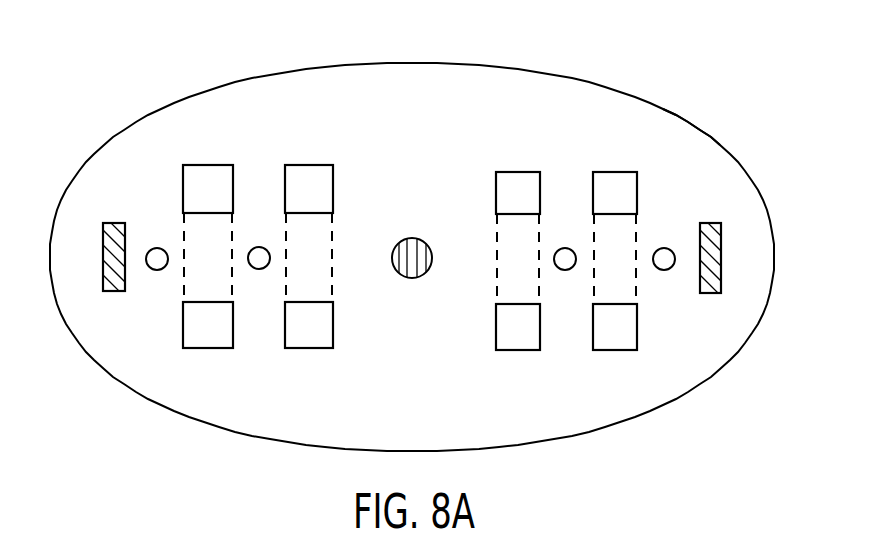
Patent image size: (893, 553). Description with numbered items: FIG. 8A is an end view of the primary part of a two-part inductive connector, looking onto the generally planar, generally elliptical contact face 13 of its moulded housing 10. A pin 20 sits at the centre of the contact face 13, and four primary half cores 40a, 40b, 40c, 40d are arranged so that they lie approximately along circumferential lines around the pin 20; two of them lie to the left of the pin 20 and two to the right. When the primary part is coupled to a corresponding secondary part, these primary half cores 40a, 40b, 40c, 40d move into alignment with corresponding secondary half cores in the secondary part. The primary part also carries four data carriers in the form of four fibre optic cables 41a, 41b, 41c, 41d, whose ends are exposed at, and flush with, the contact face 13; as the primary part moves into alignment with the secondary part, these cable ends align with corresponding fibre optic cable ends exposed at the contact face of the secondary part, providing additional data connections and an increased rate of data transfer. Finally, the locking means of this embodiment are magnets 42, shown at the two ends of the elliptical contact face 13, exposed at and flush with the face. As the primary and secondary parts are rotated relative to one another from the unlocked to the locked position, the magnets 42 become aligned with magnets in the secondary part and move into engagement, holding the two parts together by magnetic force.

The two-part moulded housing 10 is at (298, 68).
The contact face 13 is at (683, 150).
The pin 20 is at (412, 265).
The primary half core 40a is at (215, 183).
The primary half core 40b is at (316, 183).
The primary half core 40c is at (523, 190).
The primary half core 40d is at (615, 185).
The fibre optic cable 41a is at (157, 248).
The fibre optic cable 41b is at (259, 269).
The fibre optic cable 41c is at (565, 270).
The fibre optic cable 41d is at (667, 270).
The magnets 42 is at (112, 258).